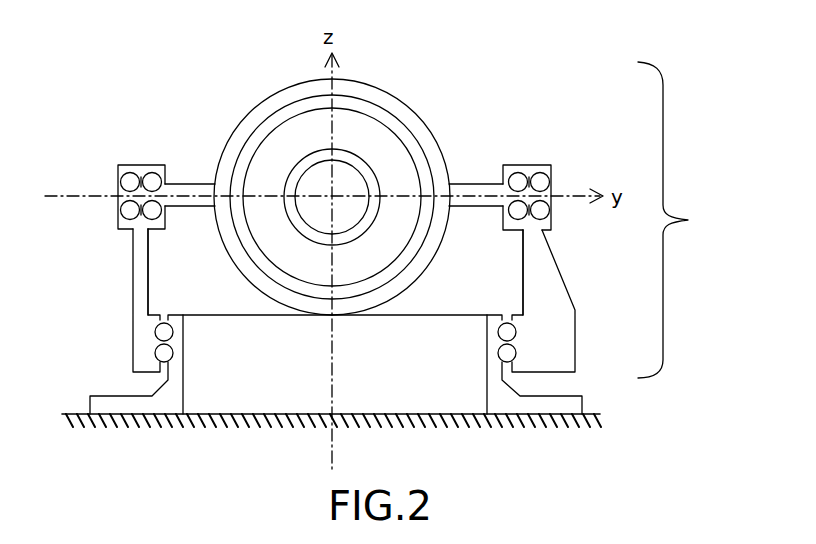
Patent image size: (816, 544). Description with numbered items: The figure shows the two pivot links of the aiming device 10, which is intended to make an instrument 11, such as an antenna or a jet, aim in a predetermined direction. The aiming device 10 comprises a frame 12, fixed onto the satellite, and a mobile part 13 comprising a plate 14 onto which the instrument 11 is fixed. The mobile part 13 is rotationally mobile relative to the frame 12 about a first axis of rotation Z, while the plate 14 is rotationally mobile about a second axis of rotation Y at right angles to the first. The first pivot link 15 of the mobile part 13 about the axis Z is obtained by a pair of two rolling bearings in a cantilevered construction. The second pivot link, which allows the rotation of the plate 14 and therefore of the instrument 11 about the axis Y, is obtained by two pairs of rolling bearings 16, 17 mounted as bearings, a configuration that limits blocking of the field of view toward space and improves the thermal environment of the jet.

The aiming device 10 is at (176, 96).
The instrument 11 is at (363, 130).
The frame 12 is at (568, 397).
The mobile part 13 is at (683, 220).
The plate 14 is at (432, 132).
The first pivot link 15 is at (110, 366).
The rolling bearings 16 is at (121, 145).
The rolling bearings 17 is at (566, 150).